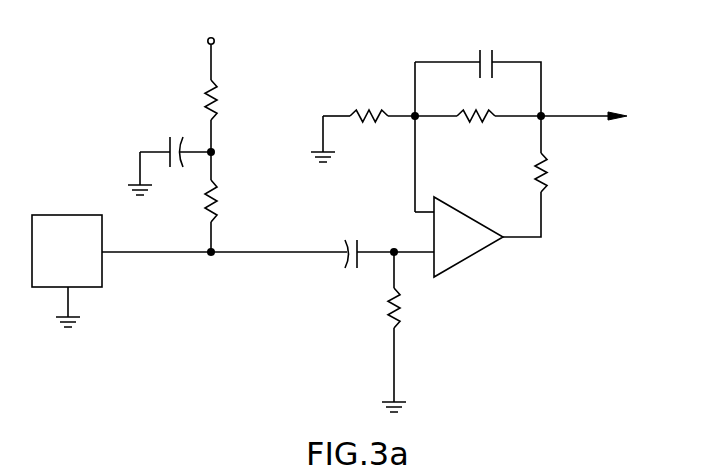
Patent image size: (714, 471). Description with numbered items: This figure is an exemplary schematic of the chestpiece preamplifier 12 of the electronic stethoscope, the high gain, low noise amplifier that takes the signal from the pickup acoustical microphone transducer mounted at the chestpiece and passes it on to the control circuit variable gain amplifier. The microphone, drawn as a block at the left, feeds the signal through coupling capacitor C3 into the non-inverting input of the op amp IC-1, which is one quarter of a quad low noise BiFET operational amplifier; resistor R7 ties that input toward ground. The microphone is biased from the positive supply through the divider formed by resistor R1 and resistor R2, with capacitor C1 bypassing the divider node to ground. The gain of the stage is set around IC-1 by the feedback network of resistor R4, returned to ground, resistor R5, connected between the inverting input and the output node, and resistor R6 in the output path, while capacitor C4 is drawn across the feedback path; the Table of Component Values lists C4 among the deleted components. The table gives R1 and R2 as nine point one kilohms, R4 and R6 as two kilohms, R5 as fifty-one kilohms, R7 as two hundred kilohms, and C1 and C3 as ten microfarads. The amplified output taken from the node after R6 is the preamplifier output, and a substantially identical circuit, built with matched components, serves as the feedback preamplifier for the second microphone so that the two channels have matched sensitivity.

The preamplifier 12 is at (301, 73).
The resistor R1 is at (223, 100).
The resistor R2 is at (223, 201).
The resistor R4 is at (369, 105).
The resistor R5 is at (476, 126).
The resistor R6 is at (526, 172).
The resistor R7 is at (406, 308).
The capacitor C1 is at (175, 140).
The capacitor C3 is at (339, 255).
The capacitor C4 is at (487, 52).
The op amp IC-1 is at (468, 237).